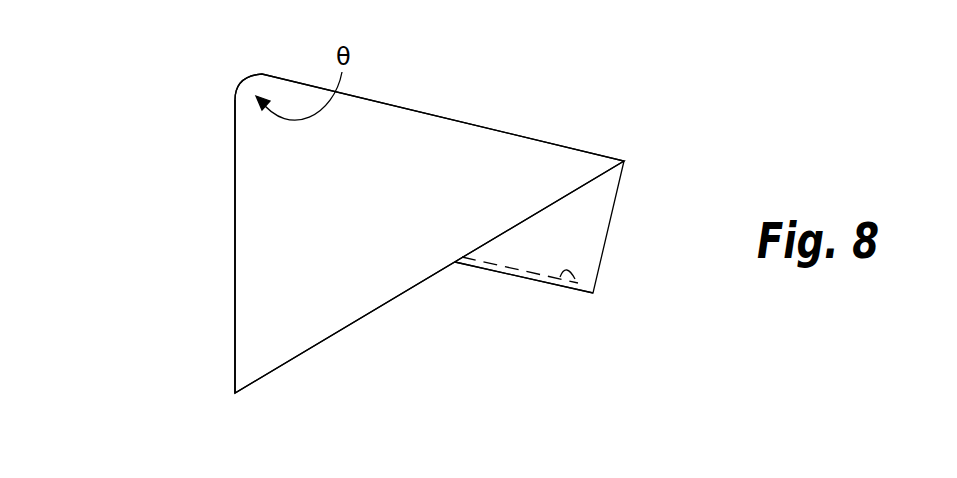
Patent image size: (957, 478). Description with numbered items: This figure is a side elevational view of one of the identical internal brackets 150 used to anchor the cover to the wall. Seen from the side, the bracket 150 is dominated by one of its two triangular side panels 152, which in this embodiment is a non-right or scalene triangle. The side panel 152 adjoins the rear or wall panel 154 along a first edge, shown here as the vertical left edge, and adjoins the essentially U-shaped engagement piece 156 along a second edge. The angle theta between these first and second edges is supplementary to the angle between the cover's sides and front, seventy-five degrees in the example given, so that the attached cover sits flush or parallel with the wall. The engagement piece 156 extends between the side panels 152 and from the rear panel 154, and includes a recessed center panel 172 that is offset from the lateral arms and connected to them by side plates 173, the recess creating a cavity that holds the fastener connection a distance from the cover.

The internal bracket 150 is at (488, 99).
The side panel 152 is at (370, 237).
The rear panel 154 is at (235, 278).
The engagement piece 156 is at (595, 217).
The center panel 172 is at (575, 279).
The side plate 173 is at (548, 238).